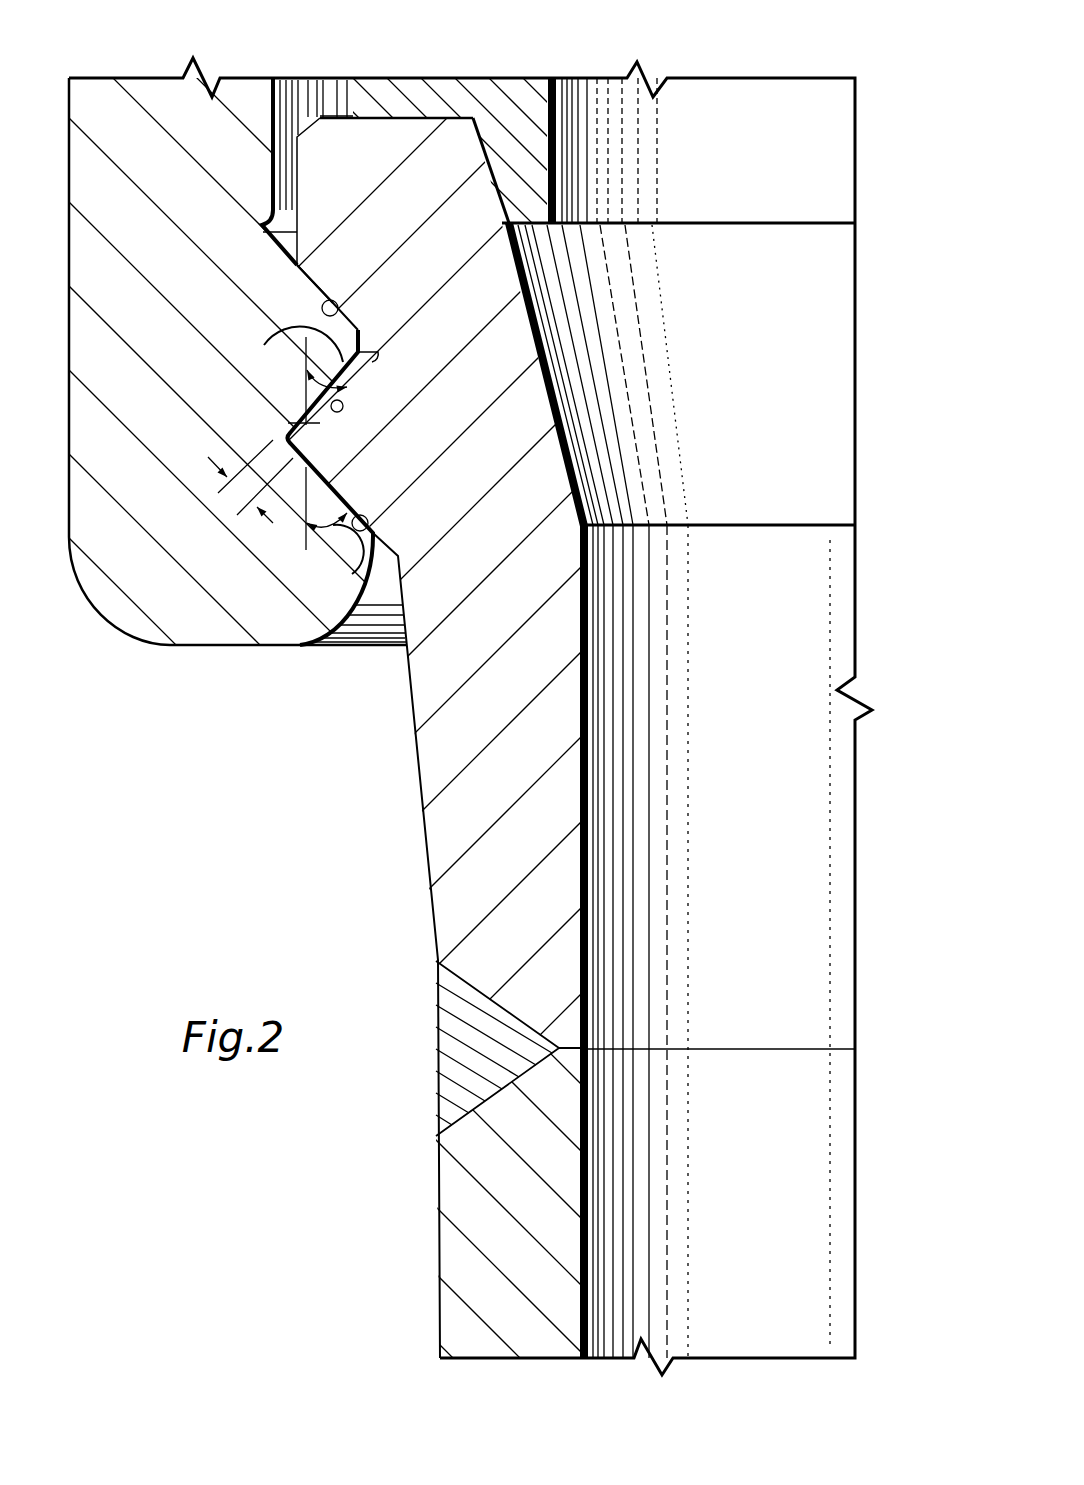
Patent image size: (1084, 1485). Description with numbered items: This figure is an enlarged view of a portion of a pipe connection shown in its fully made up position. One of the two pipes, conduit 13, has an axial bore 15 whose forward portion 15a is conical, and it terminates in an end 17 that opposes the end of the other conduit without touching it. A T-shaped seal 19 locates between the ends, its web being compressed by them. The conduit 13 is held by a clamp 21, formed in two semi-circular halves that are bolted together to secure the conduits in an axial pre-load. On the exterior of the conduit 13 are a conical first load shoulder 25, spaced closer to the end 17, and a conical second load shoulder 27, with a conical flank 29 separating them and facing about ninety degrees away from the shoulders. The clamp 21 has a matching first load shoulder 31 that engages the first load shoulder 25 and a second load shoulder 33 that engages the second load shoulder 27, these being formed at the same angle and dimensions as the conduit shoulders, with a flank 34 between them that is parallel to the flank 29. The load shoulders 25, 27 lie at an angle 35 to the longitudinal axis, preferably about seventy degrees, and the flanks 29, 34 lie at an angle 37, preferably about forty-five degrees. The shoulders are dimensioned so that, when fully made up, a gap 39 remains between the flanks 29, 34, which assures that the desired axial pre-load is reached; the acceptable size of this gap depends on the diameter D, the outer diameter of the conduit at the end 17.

The conduit 13 is at (488, 804).
The axial bore 15 is at (580, 957).
The forward portion 15a is at (533, 335).
The end 17 is at (403, 115).
The T-shaped seal 19 is at (515, 117).
The clamp 21 is at (167, 117).
The first load shoulder 25 is at (347, 306).
The second load shoulder 27 is at (363, 513).
The flank 29 is at (347, 403).
The first load shoulder 31 is at (317, 276).
The second load shoulder 33 is at (320, 468).
The flank 34 is at (385, 358).
The angle 35 is at (353, 576).
The angle 37 is at (295, 376).
The gap 39 is at (240, 490).
The diameter D is at (302, 200).